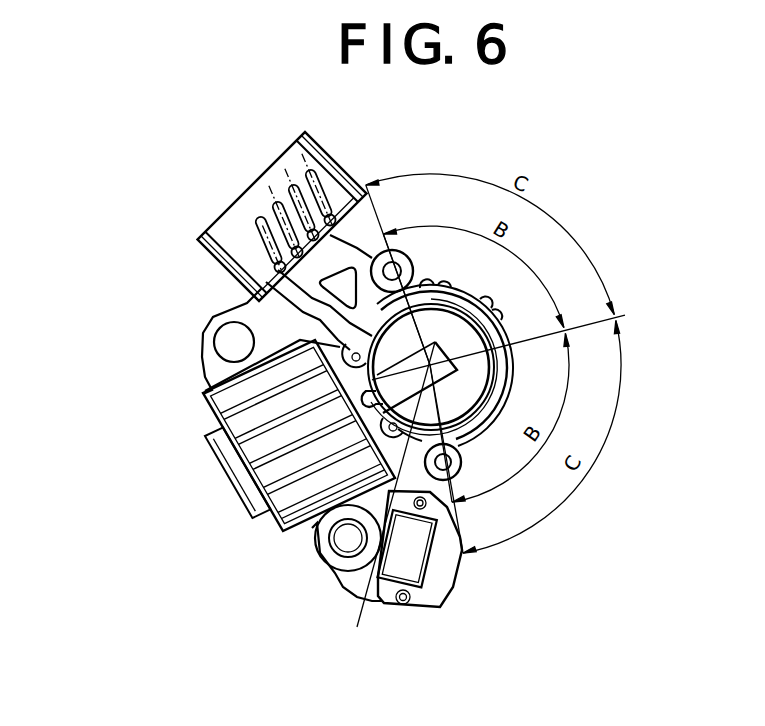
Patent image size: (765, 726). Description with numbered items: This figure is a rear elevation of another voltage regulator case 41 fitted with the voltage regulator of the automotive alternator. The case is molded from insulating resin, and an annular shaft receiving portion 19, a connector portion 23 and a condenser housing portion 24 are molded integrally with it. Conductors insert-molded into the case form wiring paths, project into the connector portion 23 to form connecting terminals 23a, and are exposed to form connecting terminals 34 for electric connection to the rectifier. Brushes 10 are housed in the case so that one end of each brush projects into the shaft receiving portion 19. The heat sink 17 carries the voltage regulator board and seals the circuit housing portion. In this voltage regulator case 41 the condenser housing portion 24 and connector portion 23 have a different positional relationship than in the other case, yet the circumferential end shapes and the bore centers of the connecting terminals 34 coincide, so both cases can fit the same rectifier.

The brushes 10 is at (478, 362).
The heat sink 17 is at (222, 411).
The shaft receiving portion 19 is at (504, 392).
The connector portion 23 is at (243, 192).
The connecting terminals 23a is at (262, 250).
The condenser housing portion 24 is at (452, 578).
The connecting terminals 34 is at (413, 268).
The voltage regulator case 41 is at (192, 333).